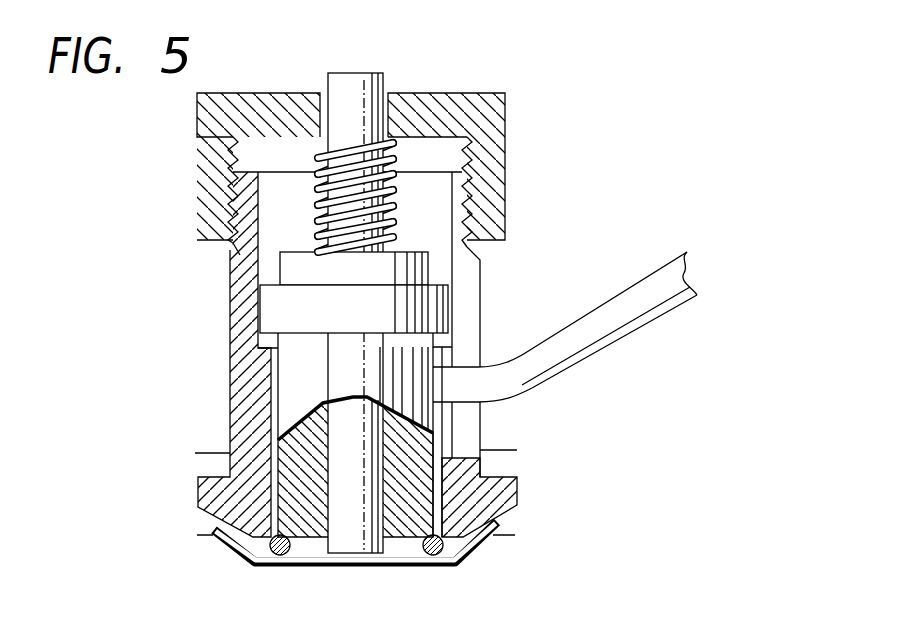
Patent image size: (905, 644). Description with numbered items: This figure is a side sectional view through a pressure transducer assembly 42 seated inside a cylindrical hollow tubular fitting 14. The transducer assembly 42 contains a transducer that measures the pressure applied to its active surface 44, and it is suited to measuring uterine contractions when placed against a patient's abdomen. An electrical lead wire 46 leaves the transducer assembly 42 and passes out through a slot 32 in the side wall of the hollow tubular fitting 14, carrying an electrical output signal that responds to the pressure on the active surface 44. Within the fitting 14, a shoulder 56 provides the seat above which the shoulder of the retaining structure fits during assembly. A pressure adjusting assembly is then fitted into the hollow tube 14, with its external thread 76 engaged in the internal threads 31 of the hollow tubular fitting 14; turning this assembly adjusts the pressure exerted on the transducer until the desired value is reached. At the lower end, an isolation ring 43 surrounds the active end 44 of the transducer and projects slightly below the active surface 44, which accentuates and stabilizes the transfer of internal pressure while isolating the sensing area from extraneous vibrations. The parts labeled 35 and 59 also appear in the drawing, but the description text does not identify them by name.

The cylindrical hollow tubular fitting 14 is at (243, 348).
The internal threads 31 is at (240, 199).
The slot 32 is at (487, 406).
The retaining clip 35 is at (490, 527).
The pressure transducer assembly 42 is at (657, 167).
The isolation ring 43 is at (432, 556).
The active surface 44 is at (355, 546).
The electrical lead wire 46 is at (633, 293).
The shoulder 56 is at (246, 172).
The cap 59 is at (505, 166).
The external thread 76 is at (470, 135).